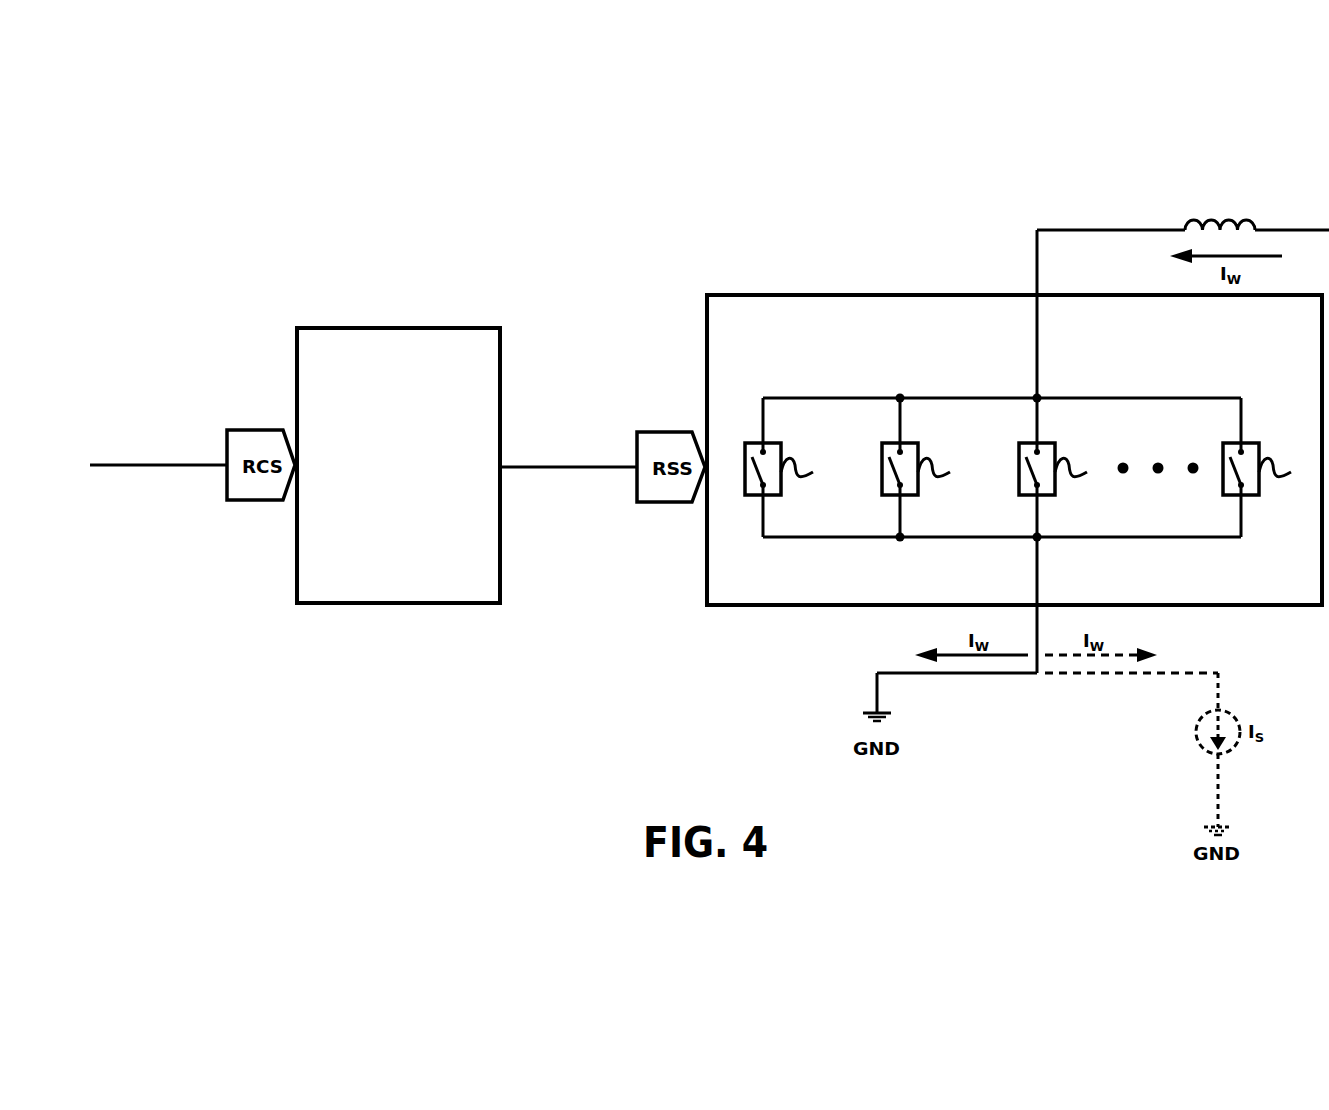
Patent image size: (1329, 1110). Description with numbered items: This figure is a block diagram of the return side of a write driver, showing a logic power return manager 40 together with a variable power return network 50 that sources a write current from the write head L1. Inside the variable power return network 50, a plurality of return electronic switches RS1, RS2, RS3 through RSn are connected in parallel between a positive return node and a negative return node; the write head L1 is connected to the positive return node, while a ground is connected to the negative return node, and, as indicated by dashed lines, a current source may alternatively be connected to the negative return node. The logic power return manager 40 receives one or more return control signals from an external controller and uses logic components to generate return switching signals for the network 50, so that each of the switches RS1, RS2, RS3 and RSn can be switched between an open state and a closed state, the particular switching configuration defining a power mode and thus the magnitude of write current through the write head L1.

The logic power return manager 40 is at (410, 532).
The variable power return network 50 is at (838, 386).
The return electronic switch RS1 is at (791, 467).
The return electronic switch RS2 is at (928, 467).
The return electronic switch RS3 is at (1065, 467).
The return electronic switch RSn is at (1270, 467).
The write head L1 is at (1183, 212).